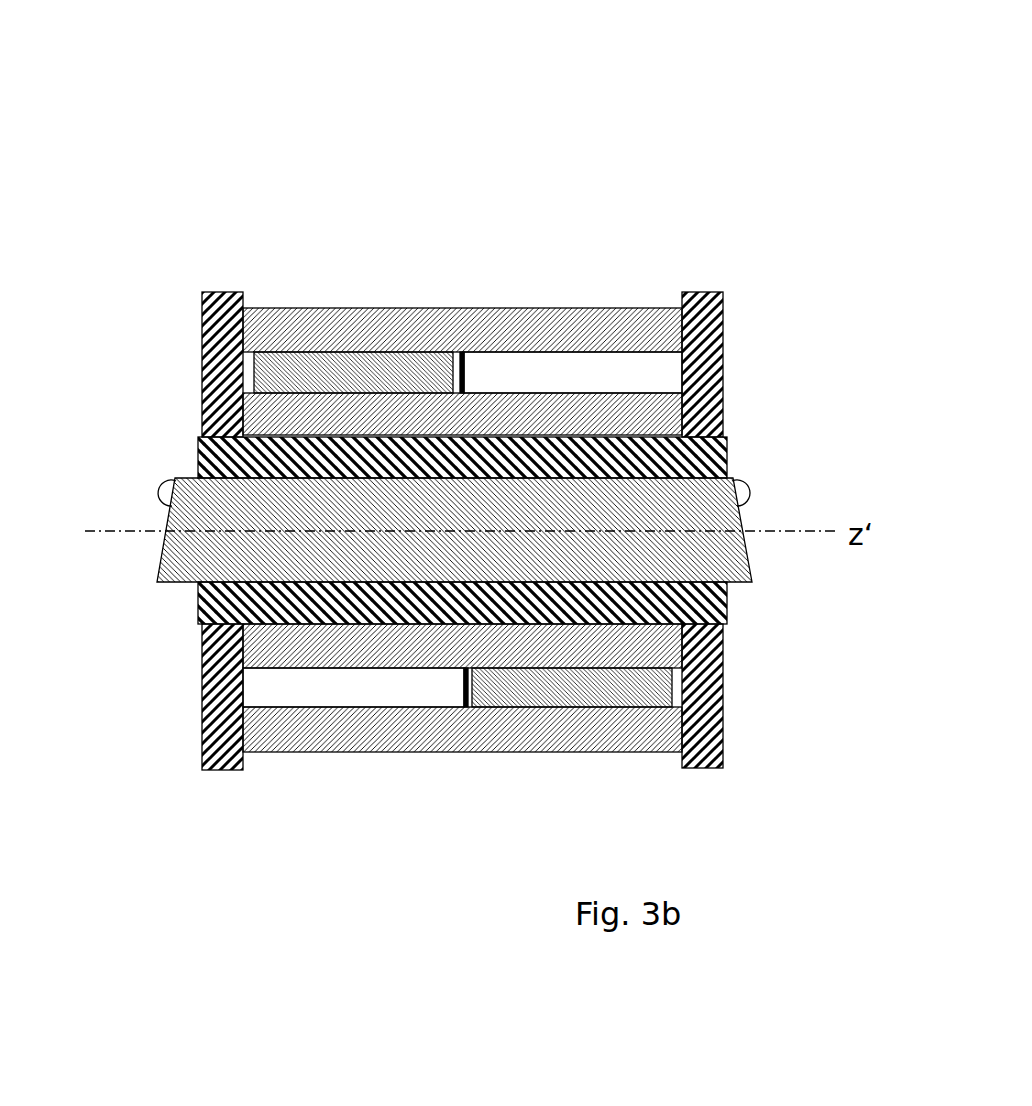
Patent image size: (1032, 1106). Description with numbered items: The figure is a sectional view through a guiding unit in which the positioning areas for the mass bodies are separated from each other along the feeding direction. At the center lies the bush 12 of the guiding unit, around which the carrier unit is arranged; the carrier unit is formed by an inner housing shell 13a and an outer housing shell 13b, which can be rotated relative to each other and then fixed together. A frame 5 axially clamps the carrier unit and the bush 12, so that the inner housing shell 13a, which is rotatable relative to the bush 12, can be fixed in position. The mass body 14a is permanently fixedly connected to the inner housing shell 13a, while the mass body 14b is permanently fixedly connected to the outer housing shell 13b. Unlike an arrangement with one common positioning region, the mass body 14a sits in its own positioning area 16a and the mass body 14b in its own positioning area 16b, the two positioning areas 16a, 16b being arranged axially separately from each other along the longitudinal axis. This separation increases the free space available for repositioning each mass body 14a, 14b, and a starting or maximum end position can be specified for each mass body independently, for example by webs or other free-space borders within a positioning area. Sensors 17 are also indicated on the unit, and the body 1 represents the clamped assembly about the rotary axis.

The rotor 1 is at (633, 563).
The frame 5 is at (215, 362).
The bush of a guiding unit 12 is at (588, 460).
The inner housing shell 13a is at (541, 403).
The outer housing shell 13b is at (575, 310).
The mass body 14a is at (467, 707).
The mass body 14b is at (422, 368).
The positioning area 16a is at (352, 692).
The positioning area 16b is at (590, 370).
The sensors 17 is at (627, 395).